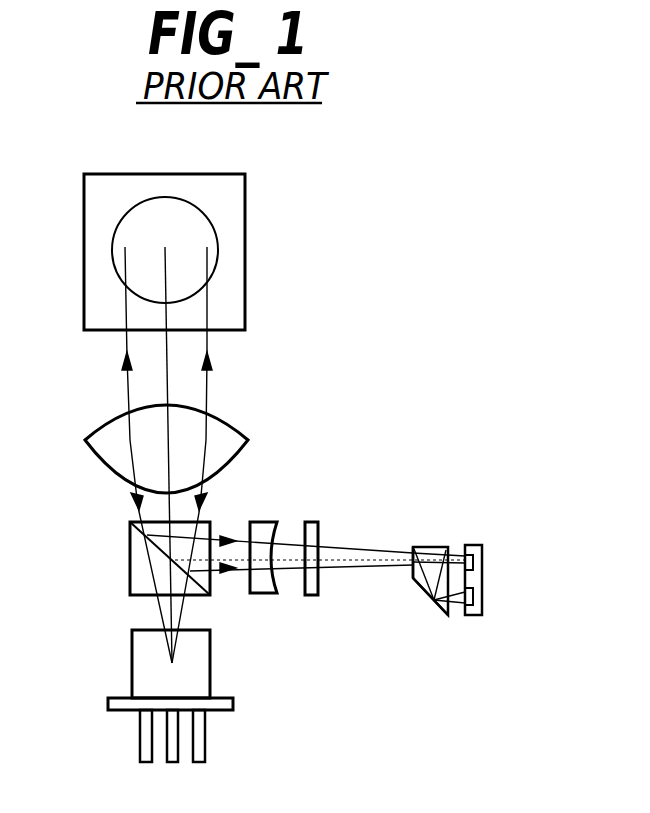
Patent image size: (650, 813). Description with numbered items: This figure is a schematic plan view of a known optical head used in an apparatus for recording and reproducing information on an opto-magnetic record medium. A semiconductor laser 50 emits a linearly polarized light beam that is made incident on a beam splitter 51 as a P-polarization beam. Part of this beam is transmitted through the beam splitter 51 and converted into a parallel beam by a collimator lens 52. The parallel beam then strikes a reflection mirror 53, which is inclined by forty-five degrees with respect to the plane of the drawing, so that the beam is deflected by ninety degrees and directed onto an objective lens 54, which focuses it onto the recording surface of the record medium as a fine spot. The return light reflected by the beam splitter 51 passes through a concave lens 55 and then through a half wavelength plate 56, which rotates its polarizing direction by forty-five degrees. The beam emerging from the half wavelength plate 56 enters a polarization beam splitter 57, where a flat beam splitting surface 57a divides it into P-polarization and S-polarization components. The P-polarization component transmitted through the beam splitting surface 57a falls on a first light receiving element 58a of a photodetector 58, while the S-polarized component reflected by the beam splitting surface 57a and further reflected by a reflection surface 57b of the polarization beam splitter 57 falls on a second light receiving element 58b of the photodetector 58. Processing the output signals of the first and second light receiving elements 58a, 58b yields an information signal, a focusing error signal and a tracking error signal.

The semiconductor laser 50 is at (210, 663).
The beam splitter 51 is at (125, 572).
The collimator lens 52 is at (227, 422).
The reflection mirror 53 is at (245, 212).
The objective lens 54 is at (218, 248).
The concave lens 55 is at (260, 593).
The half wavelength plate 56 is at (313, 522).
The polarization beam splitter 57 is at (441, 540).
The beam splitting surface 57a is at (420, 545).
The reflection surface 57b is at (423, 597).
The photodetector 58 is at (488, 542).
The first light receiving element 58a is at (482, 562).
The second light receiving element 58b is at (482, 600).